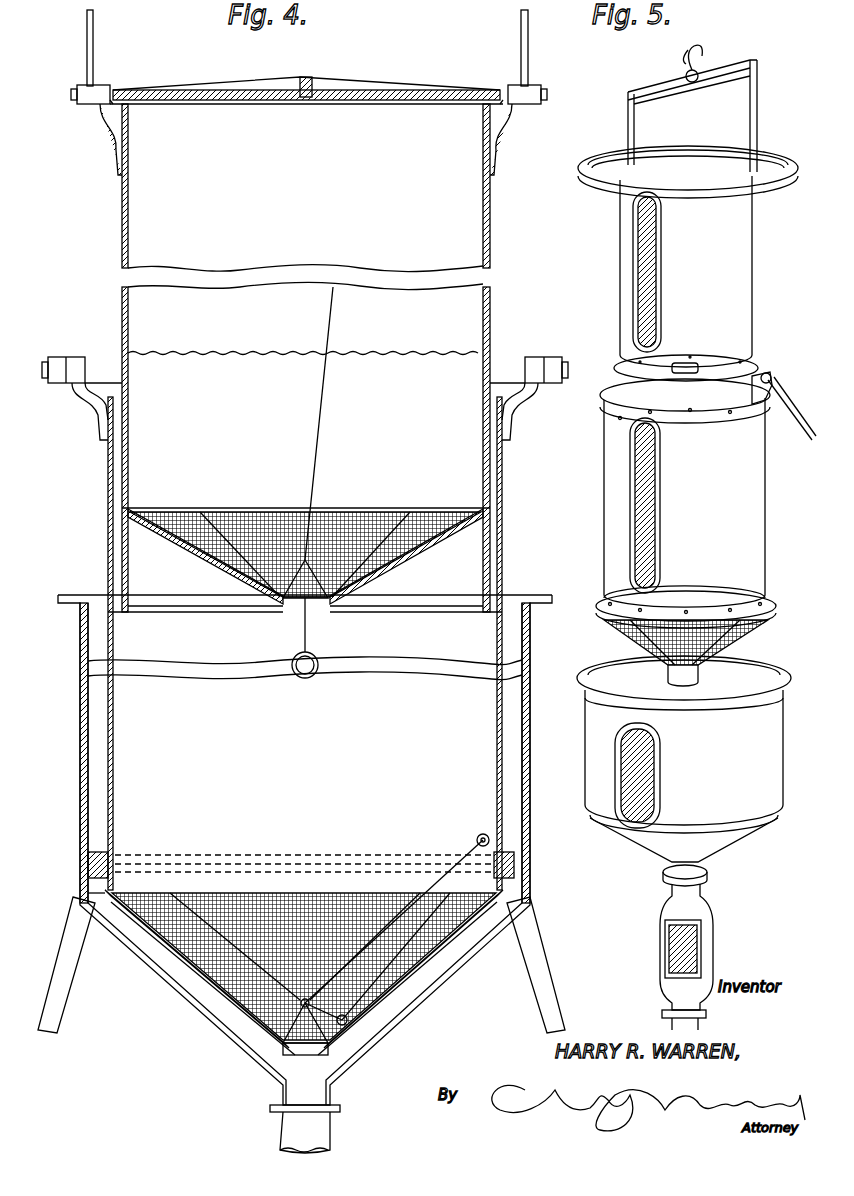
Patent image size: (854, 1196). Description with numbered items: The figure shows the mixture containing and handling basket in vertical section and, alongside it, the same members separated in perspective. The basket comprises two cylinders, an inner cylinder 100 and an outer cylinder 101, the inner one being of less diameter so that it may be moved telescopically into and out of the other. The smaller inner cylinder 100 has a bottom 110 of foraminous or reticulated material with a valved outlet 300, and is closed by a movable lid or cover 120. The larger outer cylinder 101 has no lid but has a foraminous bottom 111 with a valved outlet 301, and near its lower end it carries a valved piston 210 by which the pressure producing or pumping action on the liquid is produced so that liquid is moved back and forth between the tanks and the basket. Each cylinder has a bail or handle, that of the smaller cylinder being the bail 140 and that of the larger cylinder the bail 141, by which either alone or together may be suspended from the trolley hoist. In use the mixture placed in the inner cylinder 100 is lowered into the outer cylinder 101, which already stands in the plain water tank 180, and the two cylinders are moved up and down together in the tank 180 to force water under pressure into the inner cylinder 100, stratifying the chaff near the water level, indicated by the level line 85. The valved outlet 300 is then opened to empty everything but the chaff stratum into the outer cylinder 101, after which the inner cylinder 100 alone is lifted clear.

In FIG. 4, the liquid level line 85 is at (406, 352).
In FIG. 4, the inner cylinder 100 is at (490, 203).
In FIG. 5, the inner cylinder 100 is at (753, 258).
In FIG. 4, the outer cylinder 101 is at (503, 557).
In FIG. 5, the outer cylinder 101 is at (765, 495).
In FIG. 4, the bottom 110 is at (183, 546).
In FIG. 4, the foraminous bottom 111 is at (200, 990).
In FIG. 5, the foraminous bottom 111 is at (736, 628).
In FIG. 4, the lid or cover 120 is at (432, 94).
In FIG. 5, the lid or cover 120 is at (698, 152).
In FIG. 4, the bail or handle 140 is at (93, 47).
In FIG. 5, the bail or handle 140 is at (758, 118).
In FIG. 4, the bail or handle 141 is at (62, 357).
In FIG. 5, the bail or handle 141 is at (782, 392).
In FIG. 4, the plain water tank 180 is at (86, 678).
In FIG. 5, the plain water tank 180 is at (778, 752).
In FIG. 4, the valved piston 210 is at (88, 860).
In FIG. 5, the valved piston 210 is at (772, 596).
In FIG. 4, the valved outlet 300 is at (312, 612).
In FIG. 5, the valved outlet 300 is at (692, 364).
In FIG. 4, the valved outlet 301 is at (295, 1048).